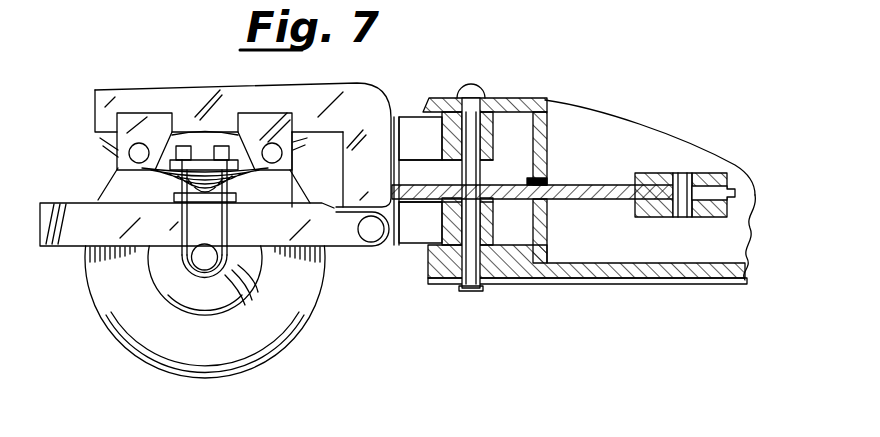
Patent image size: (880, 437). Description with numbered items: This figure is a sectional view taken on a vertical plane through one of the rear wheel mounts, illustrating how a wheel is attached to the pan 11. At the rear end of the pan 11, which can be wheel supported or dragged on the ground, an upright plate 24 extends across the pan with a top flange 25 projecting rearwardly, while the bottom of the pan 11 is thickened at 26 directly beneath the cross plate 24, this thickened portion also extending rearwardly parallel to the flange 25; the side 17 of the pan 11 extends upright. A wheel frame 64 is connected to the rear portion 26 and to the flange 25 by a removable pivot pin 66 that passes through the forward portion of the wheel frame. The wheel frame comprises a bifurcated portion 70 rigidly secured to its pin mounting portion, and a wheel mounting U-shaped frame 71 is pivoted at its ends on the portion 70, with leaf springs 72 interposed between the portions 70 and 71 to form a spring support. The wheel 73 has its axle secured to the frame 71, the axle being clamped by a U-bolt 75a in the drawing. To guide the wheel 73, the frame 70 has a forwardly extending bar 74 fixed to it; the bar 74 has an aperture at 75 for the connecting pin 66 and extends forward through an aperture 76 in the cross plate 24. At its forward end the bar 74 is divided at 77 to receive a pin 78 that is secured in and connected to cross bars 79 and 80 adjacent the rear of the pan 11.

The bifurcated portion 70 is at (198, 92).
The leaf springs 72 is at (140, 178).
The aperture 75 is at (462, 184).
The U-bolt 75a is at (178, 272).
The wheel mounting U-shaped frame 71 is at (77, 244).
The wheels 73 is at (142, 333).
The top flange 25 is at (430, 99).
The wheel frame 64 is at (412, 247).
The thickened portion 26 is at (433, 266).
The pan 11 is at (667, 284).
The removable pivot pin 66 is at (470, 294).
The forwardly extending bar 74 is at (595, 186).
The aperture 76 is at (537, 183).
The upright plate 24 is at (545, 118).
The side 17 is at (750, 236).
The cross bar 79 is at (653, 173).
The pins 78 is at (680, 173).
The divided forward end 77 is at (713, 188).
The cross bar 80 is at (737, 208).